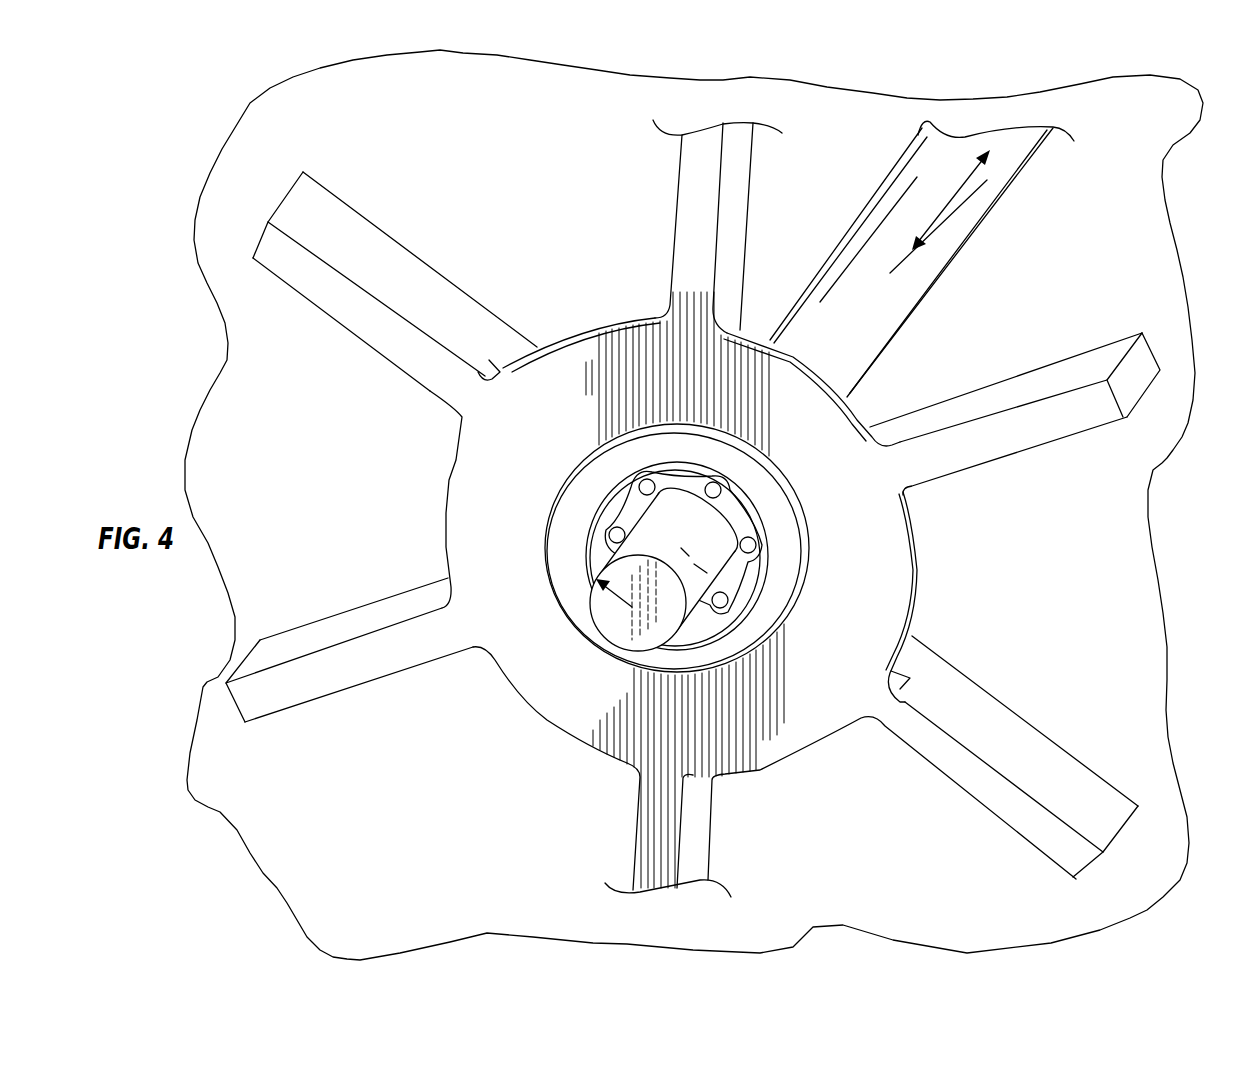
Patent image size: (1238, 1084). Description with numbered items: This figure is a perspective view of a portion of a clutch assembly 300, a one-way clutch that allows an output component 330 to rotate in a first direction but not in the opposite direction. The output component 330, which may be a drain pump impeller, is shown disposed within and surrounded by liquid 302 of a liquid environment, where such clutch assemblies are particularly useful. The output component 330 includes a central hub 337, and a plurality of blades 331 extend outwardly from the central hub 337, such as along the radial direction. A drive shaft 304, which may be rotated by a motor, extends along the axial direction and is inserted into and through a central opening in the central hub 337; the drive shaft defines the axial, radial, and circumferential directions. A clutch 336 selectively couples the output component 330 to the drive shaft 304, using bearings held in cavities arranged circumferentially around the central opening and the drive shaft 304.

The clutch assembly 300 is at (1066, 225).
The liquid 302 is at (833, 116).
The drive shaft 304 is at (908, 303).
The output component 330 is at (416, 246).
The blades 331 is at (363, 317).
The clutch 336 is at (588, 482).
The central hub 337 is at (899, 596).